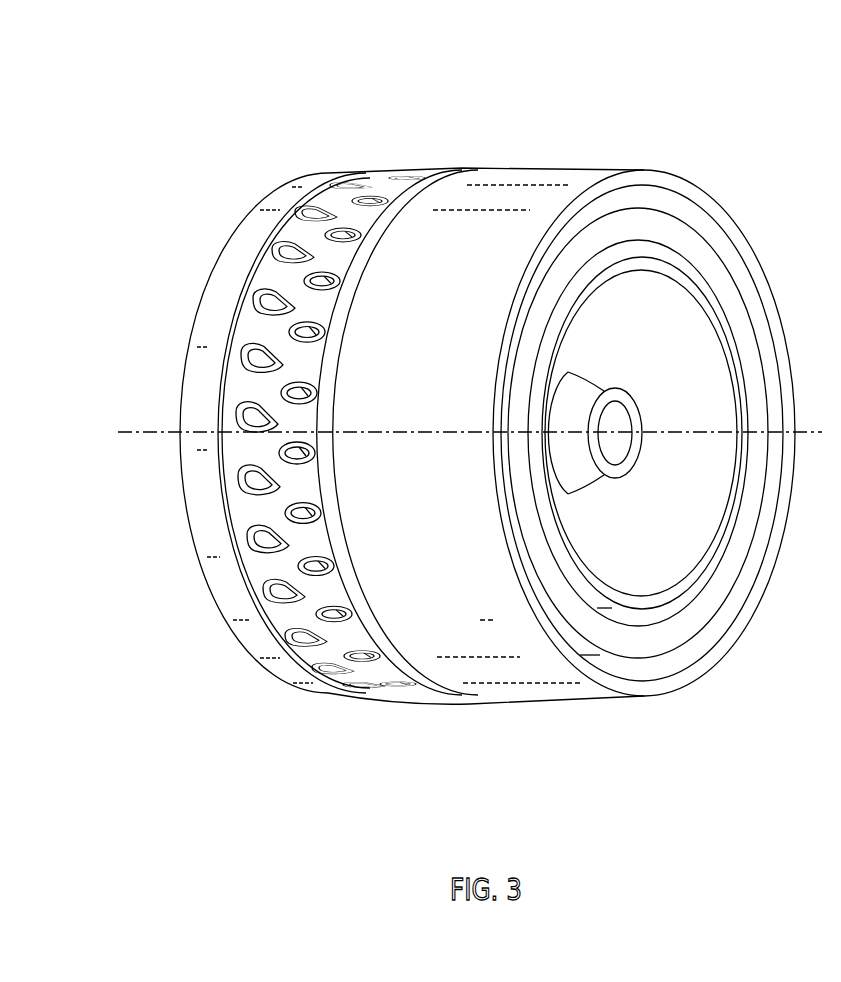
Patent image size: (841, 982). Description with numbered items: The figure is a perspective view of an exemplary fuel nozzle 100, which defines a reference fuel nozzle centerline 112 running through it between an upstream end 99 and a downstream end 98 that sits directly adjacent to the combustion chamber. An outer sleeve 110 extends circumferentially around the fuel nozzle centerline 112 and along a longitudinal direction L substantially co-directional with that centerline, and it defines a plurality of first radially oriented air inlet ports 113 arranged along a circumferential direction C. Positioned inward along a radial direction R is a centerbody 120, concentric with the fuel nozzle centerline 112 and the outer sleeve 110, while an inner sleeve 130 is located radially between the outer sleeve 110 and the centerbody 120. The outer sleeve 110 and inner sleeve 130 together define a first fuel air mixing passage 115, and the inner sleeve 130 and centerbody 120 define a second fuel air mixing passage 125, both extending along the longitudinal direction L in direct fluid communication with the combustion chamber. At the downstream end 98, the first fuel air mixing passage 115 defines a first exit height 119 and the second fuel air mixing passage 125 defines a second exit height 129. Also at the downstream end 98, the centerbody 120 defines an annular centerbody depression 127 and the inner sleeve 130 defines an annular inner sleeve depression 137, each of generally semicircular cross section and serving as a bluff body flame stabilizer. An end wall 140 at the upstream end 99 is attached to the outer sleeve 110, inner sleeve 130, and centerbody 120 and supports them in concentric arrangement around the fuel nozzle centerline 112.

The fuel nozzle 100 is at (445, 103).
The outer sleeve 110 is at (552, 168).
The first radially oriented air inlet ports 113 is at (352, 180).
The end wall 140 is at (281, 183).
The first fuel air mixing passage 115 is at (612, 196).
The inner sleeve 130 is at (616, 220).
The centerbody 120 is at (596, 262).
The annular centerbody depression 127 is at (670, 355).
The second exit height 129 is at (668, 612).
The annular inner sleeve depression 137 is at (673, 645).
The first exit height 119 is at (665, 662).
The second fuel air mixing passage 125 is at (634, 620).
The fuel nozzle centerline 112 is at (134, 436).
The upstream end 99 is at (144, 213).
The downstream end 98 is at (761, 213).
The circumferential direction C is at (214, 224).
The radial direction R is at (153, 357).
The longitudinal direction L is at (670, 768).